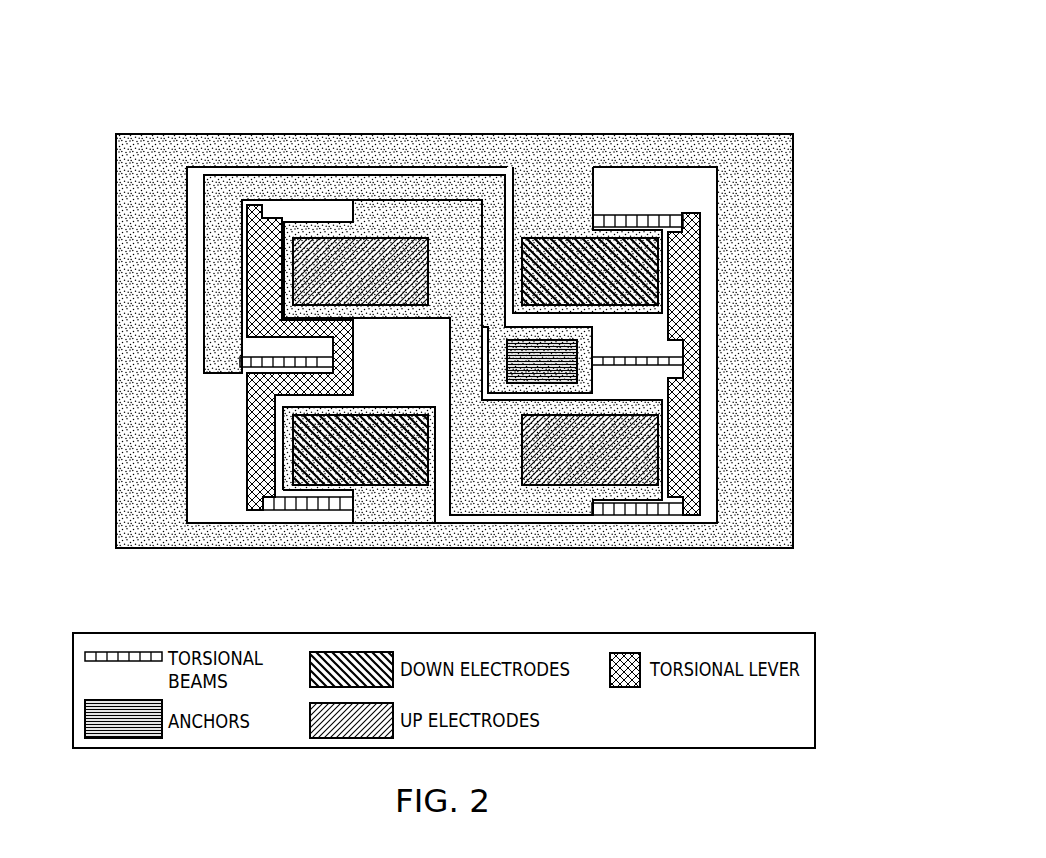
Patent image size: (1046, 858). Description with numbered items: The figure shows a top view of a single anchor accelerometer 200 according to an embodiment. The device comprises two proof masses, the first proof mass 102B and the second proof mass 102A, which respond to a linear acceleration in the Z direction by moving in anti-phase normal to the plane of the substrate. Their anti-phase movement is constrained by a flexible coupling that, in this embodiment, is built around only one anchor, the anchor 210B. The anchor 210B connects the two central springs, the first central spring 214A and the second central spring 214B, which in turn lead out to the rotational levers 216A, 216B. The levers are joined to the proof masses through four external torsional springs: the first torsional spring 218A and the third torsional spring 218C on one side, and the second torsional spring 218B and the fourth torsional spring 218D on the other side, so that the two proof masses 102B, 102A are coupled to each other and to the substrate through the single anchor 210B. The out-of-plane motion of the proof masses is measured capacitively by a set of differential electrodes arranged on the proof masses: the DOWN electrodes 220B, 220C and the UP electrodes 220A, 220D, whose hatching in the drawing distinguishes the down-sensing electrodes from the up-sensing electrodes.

The single anchor accelerometer 200 is at (727, 75).
The proof mass PM2 102A is at (123, 307).
The proof mass PM1 102B is at (447, 213).
The anchor A 210B is at (592, 373).
The central spring B1 214A is at (328, 362).
The central spring B2 214B is at (637, 362).
The rotational lever 216A is at (248, 457).
The rotational lever 216B is at (687, 418).
The torsional spring B11 218A is at (291, 210).
The torsional spring B21 218B is at (692, 220).
The torsional spring B12 218C is at (265, 503).
The torsional spring B22 218D is at (636, 513).
The UP electrode C21 220A is at (411, 298).
The DOWN electrode C11 220B is at (645, 271).
The DOWN electrode C11 220C is at (390, 421).
The UP electrode C21 220D is at (590, 473).